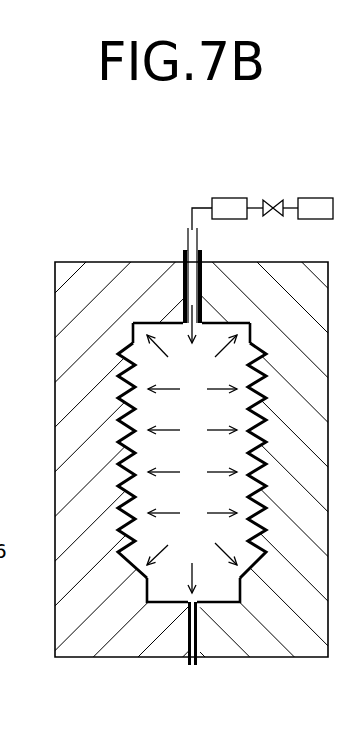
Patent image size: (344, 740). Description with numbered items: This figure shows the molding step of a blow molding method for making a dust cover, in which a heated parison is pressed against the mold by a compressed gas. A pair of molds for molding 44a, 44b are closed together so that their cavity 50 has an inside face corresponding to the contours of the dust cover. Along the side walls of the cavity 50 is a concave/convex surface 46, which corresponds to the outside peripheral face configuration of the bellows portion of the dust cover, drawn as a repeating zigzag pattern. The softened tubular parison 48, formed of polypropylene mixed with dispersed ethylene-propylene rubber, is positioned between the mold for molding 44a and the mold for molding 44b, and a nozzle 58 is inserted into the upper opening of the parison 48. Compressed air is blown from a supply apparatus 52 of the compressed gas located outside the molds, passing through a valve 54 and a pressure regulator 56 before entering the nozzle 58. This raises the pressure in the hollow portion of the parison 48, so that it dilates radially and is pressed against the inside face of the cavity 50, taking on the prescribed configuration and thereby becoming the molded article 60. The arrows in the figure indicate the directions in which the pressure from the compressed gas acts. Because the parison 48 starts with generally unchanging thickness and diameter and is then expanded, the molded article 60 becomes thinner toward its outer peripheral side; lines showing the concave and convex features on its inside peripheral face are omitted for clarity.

The mold for molding 44a is at (86, 268).
The mold for molding 44b is at (291, 268).
The concave/convex surface 46 is at (117, 382).
The parison 48 is at (266, 412).
The cavity 50 is at (205, 597).
The supply apparatus of the compressed gas 52 is at (317, 206).
The valve 54 is at (273, 204).
The pressure regulator 56 is at (232, 205).
The nozzle 58 is at (187, 240).
The molded article 60 is at (121, 580).